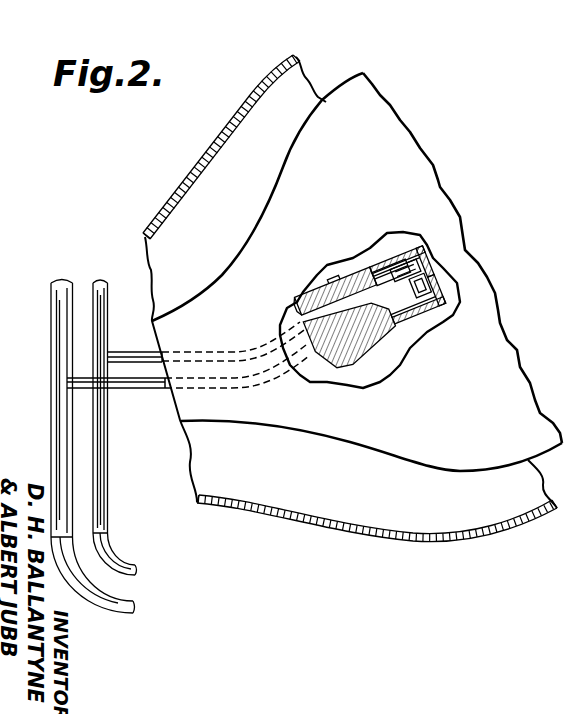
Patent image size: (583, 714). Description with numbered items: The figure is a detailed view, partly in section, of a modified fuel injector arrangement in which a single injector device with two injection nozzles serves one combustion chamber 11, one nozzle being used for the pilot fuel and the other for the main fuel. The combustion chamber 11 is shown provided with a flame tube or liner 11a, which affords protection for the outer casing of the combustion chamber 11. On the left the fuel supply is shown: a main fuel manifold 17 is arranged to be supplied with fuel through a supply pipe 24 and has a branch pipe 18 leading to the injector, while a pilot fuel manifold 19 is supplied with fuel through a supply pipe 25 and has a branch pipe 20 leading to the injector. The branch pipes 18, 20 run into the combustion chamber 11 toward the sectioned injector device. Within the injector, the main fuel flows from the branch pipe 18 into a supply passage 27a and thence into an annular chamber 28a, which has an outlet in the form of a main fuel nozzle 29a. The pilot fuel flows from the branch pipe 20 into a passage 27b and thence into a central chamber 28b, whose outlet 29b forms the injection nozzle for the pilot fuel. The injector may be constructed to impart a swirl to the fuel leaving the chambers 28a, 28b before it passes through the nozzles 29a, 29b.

The combustion chamber 11 is at (213, 133).
The flame tube or liner 11a is at (363, 120).
The main fuel manifold 17 is at (60, 278).
The branch pipe 18 is at (138, 389).
The pilot fuel manifold 19 is at (108, 480).
The branch pipe 20 is at (125, 352).
The supply pipe 24 is at (128, 603).
The supply pipe 25 is at (119, 552).
The supply passage 27a is at (357, 348).
The passage 27b is at (303, 316).
The annular chamber 28a is at (423, 317).
The central chamber 28b is at (387, 266).
The main fuel nozzle 29a is at (437, 285).
The outlet 29b is at (420, 283).